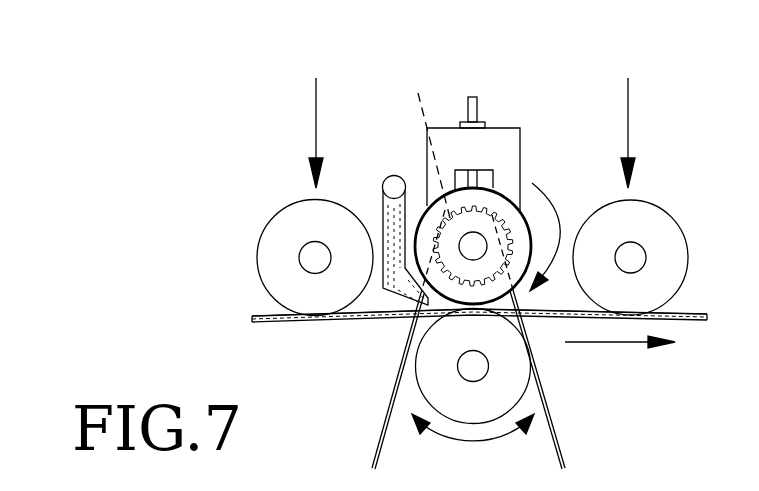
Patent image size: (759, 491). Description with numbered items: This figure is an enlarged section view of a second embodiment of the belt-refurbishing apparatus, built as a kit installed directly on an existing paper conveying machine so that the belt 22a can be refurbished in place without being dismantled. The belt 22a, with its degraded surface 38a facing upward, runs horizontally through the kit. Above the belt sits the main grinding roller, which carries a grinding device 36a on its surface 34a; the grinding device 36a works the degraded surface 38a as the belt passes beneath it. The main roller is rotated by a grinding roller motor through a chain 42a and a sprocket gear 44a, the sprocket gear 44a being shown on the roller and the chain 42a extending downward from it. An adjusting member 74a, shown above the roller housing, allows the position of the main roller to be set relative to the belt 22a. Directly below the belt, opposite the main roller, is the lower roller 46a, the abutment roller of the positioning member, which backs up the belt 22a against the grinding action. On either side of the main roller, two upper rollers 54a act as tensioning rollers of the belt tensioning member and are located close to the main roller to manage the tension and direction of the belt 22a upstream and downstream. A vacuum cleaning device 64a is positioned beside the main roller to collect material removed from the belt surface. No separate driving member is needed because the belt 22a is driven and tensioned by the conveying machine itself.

The belt 22a is at (262, 317).
The degraded surface 38a is at (272, 315).
The upper roller 54a is at (285, 207).
The vacuum cleaning device 64a is at (382, 220).
The surface 34a is at (492, 178).
The adjusting member 74a is at (510, 103).
The grinding device 36a is at (531, 243).
The sprocket gear 44a is at (429, 140).
The chain 42a is at (395, 385).
The lower roller 46a is at (528, 385).